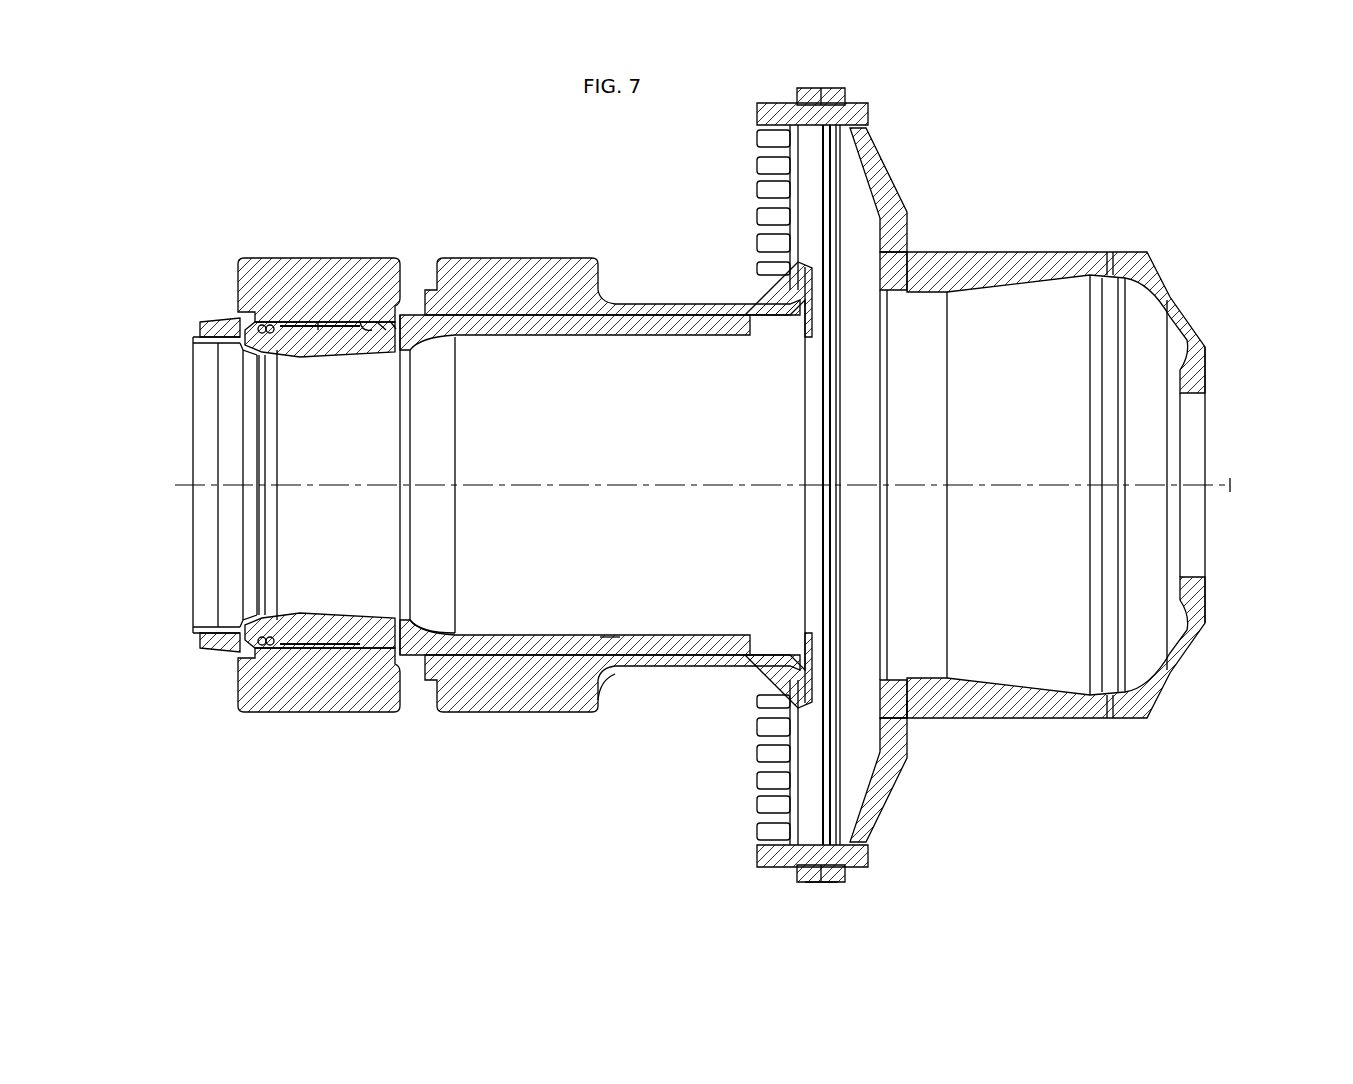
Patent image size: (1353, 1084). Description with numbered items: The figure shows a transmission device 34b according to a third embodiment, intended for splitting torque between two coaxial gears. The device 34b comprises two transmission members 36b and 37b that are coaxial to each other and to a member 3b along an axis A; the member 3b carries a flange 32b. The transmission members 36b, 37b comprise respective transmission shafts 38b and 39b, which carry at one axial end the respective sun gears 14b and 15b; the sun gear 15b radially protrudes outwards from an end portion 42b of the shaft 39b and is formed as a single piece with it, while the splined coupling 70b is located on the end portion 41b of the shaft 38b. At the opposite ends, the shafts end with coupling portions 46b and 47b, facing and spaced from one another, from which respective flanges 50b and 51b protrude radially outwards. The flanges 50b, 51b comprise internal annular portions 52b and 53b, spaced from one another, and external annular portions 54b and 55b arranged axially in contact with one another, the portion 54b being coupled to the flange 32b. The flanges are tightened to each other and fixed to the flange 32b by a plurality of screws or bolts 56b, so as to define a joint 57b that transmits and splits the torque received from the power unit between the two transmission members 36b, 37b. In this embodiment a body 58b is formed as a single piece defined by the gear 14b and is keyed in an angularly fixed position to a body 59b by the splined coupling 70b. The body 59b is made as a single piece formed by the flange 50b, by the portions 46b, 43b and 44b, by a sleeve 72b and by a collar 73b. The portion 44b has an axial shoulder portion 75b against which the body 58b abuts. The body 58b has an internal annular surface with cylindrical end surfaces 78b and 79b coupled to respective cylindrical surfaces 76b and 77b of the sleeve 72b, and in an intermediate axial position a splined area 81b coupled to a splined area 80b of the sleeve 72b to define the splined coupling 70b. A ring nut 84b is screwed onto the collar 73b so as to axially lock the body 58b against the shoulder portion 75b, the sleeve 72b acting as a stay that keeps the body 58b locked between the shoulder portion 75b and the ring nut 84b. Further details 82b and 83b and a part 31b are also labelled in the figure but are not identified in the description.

The transmission member 36b is at (243, 256).
The cylindrical surface 77b is at (262, 325).
The splined area 81b is at (320, 322).
The groove 82b is at (365, 322).
The cylindrical surface 76b is at (385, 322).
The axial shoulder portion 75b is at (396, 322).
The transmission member 37b is at (482, 254).
The ring nut 84b is at (215, 328).
The collar 73b is at (195, 345).
The cylindrical end surface 79b is at (245, 350).
The seal ring 83b is at (272, 336).
The splined area 80b is at (330, 330).
The cylindrical end surface 78b is at (400, 352).
The flange 32b is at (892, 225).
The transmission device 34b is at (998, 203).
The axis A is at (1232, 485).
The end portion 41b is at (392, 617).
The sleeve 72b is at (305, 636).
The portion 44b is at (430, 640).
The end portion 42b is at (500, 638).
The portion 43b is at (600, 640).
The body 59b is at (778, 632).
The coupling portion 46b is at (835, 640).
The sun gear 14b is at (238, 660).
The splined coupling 70b is at (316, 650).
The body 58b is at (346, 716).
The transmission shaft 38b is at (410, 662).
The sun gear 15b is at (552, 716).
The transmission shaft 39b is at (630, 672).
The coupling portion 47b is at (760, 690).
The internal annular portion 53b is at (768, 755).
The flange 51b is at (790, 780).
The external annular portion 55b is at (762, 852).
The joint 57b is at (800, 890).
The external annular portion 54b is at (828, 884).
The screws or bolts 56b is at (865, 832).
The flange 50b is at (890, 760).
The internal annular portion 52b is at (908, 720).
The body 31b is at (1022, 720).
The member 3b is at (1120, 722).